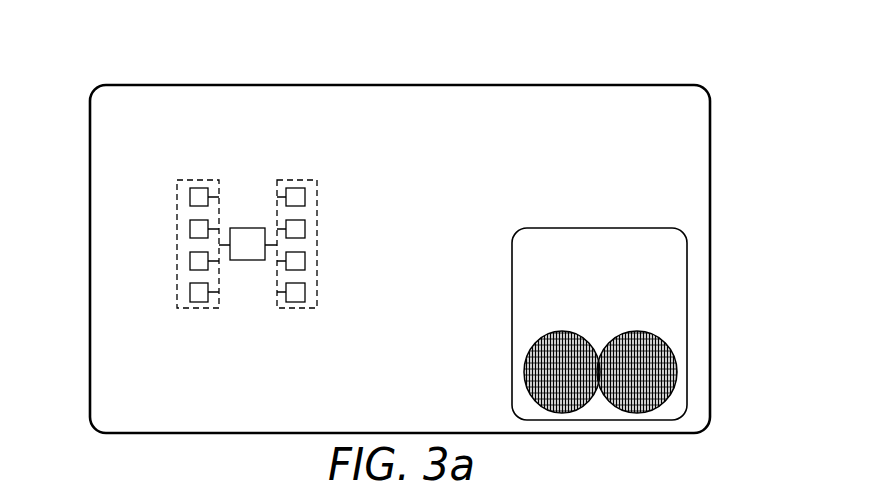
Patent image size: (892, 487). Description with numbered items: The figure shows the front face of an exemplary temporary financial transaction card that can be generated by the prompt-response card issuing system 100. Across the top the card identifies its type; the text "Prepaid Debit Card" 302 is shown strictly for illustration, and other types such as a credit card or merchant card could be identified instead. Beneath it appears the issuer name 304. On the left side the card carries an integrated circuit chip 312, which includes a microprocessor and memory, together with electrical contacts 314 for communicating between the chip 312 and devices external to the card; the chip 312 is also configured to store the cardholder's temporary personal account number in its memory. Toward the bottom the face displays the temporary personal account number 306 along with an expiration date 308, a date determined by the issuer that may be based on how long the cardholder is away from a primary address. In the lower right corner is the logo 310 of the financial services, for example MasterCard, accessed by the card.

The prompt-response card issuing system 100 is at (402, 85).
The card type identifier 302 is at (522, 108).
The issuer name 304 is at (608, 163).
The temporary personal account number (TPAN) 306 is at (108, 372).
The expiration date 308 is at (115, 403).
The logo 310 is at (672, 355).
The integrated circuit (IC) chip 312 is at (247, 245).
The electrical contacts 314 is at (197, 292).